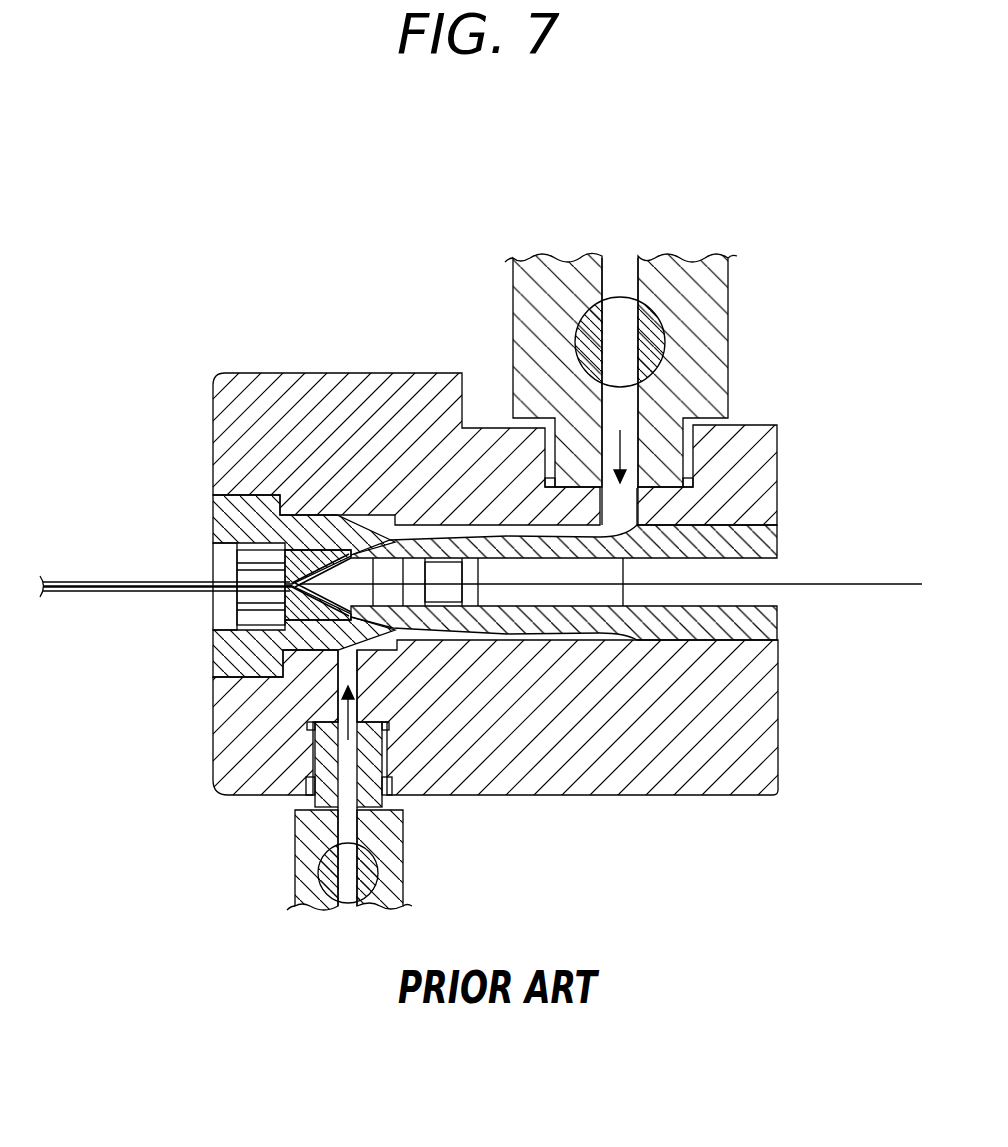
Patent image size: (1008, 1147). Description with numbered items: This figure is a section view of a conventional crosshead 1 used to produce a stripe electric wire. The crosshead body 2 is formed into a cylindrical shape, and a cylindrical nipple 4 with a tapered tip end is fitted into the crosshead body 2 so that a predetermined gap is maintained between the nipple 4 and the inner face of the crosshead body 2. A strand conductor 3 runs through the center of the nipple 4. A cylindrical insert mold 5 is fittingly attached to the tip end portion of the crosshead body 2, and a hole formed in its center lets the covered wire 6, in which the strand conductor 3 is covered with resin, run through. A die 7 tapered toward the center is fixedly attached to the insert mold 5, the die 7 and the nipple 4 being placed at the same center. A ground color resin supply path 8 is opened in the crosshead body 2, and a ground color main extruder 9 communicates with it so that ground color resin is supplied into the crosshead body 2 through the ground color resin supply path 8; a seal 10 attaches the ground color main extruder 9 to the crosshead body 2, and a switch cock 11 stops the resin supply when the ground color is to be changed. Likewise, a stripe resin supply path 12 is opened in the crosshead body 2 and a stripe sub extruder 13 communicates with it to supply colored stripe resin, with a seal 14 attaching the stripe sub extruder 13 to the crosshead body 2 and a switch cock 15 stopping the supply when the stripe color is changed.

The crosshead 1 is at (444, 272).
The crosshead body 2 is at (218, 428).
The strand conductor 3 is at (872, 583).
The nipple 4 is at (778, 617).
The insert mold 5 is at (217, 657).
The covered wire 6 is at (112, 582).
The die 7 is at (217, 525).
The ground color resin supply path 8 is at (630, 512).
The ground color main extruder 9 is at (710, 310).
The seal 10 is at (690, 475).
The switch cock 11 is at (657, 323).
The stripe resin supply path 12 is at (362, 667).
The stripe sub extruder 13 is at (398, 877).
The seal 14 is at (305, 738).
The switch cock 15 is at (300, 885).